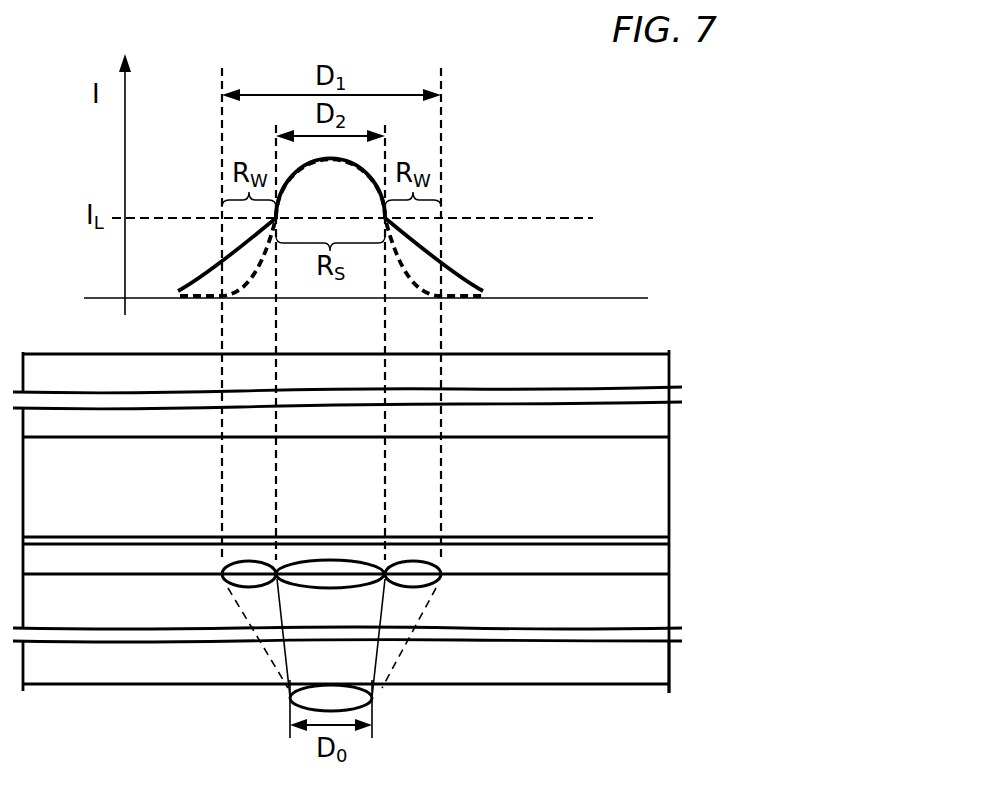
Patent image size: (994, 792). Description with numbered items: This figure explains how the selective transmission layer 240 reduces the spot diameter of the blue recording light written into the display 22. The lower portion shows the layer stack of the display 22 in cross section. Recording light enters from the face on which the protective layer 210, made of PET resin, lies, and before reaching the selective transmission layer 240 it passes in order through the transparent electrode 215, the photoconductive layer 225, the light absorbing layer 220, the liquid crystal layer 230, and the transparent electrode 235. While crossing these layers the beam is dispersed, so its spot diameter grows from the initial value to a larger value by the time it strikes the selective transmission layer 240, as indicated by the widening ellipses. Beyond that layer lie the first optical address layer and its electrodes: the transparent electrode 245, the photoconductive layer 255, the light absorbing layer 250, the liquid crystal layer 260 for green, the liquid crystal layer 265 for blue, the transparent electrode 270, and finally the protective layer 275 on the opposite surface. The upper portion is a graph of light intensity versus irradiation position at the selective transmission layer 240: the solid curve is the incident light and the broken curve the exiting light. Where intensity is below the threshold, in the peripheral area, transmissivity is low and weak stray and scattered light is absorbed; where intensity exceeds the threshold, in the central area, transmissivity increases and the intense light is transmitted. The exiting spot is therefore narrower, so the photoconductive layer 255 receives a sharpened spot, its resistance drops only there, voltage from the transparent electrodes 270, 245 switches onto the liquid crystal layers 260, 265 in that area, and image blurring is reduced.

The display 22 is at (810, 347).
The protective layer 275 is at (390, 370).
The transparent electrode 270 is at (412, 371).
The liquid crystal layer 265 is at (385, 402).
The liquid crystal layer 260 is at (407, 404).
The light absorbing layer 250 is at (682, 347).
The photoconductive layer 255 is at (653, 519).
The transparent electrode 245 is at (669, 540).
The selective transmission layer 240 is at (653, 564).
The transparent electrode 235 is at (661, 614).
The liquid crystal layer 230 is at (405, 619).
The light absorbing layer 220 is at (417, 640).
The photoconductive layer 225 is at (402, 657).
The transparent electrode 215 is at (417, 658).
The protective layer 210 is at (553, 668).